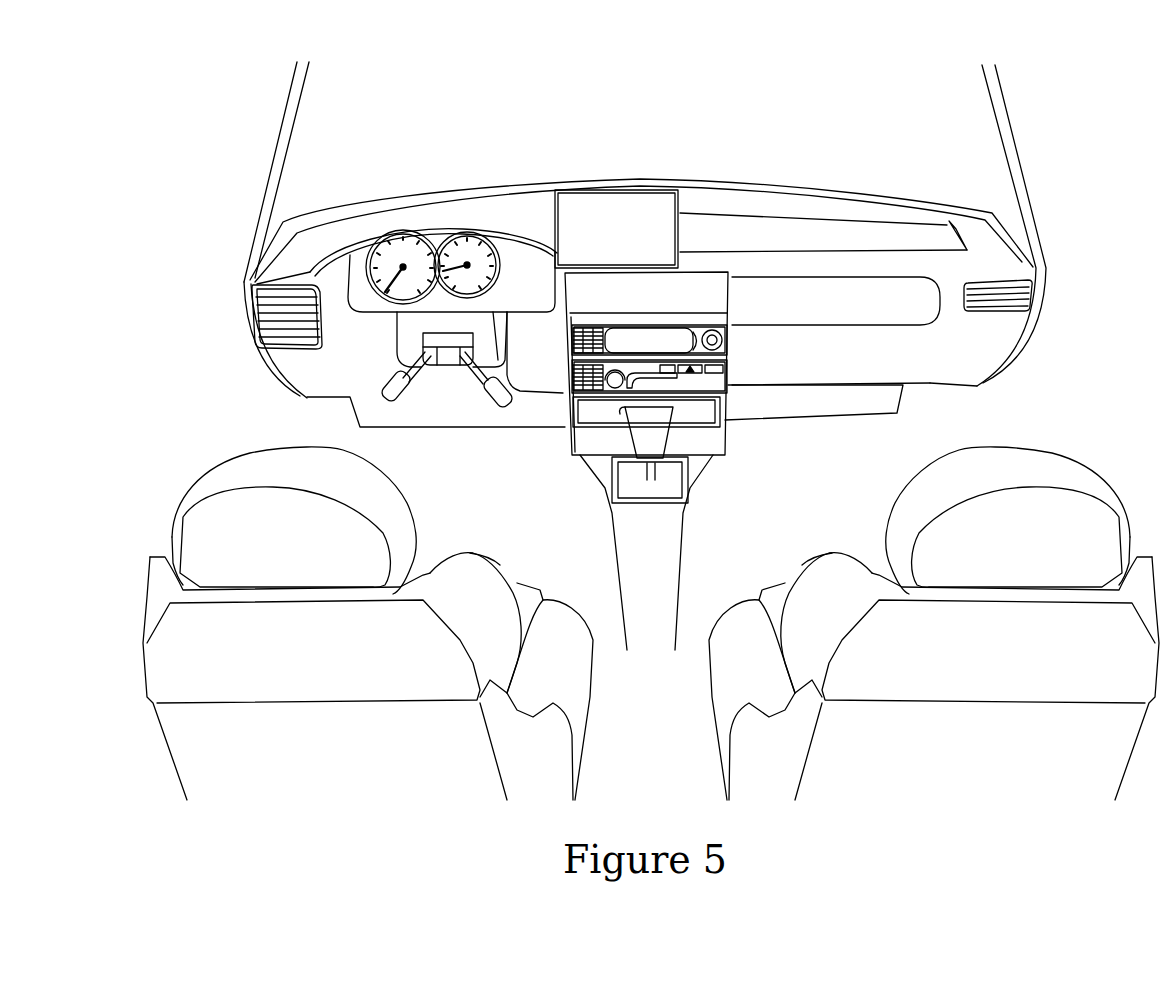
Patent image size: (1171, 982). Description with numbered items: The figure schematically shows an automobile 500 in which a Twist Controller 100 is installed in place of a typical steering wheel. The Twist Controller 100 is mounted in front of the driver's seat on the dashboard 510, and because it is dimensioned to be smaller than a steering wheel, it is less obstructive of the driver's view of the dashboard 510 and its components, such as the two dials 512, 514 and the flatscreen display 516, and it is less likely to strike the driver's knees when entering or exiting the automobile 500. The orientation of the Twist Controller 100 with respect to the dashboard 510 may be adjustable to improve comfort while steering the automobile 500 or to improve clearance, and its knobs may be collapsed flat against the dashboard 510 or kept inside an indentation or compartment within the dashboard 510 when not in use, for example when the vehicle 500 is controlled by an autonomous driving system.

The automobile 500 is at (1060, 136).
The dashboard 510 is at (669, 119).
The dial 512 is at (398, 257).
The dial 514 is at (480, 255).
The flatscreen display 516 is at (592, 205).
The Twist Controller 100 is at (417, 348).